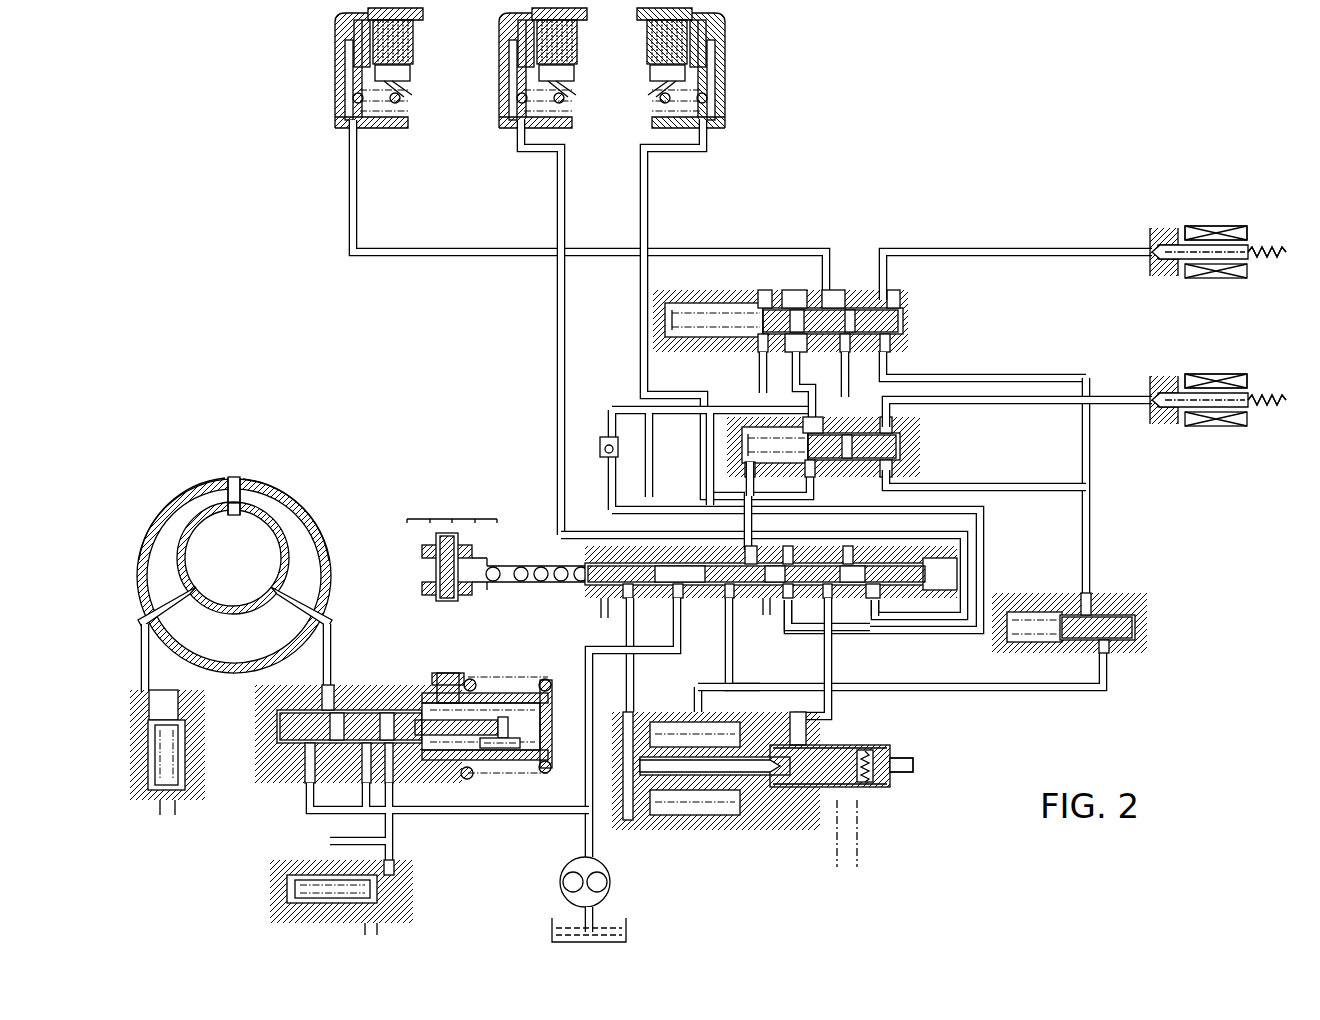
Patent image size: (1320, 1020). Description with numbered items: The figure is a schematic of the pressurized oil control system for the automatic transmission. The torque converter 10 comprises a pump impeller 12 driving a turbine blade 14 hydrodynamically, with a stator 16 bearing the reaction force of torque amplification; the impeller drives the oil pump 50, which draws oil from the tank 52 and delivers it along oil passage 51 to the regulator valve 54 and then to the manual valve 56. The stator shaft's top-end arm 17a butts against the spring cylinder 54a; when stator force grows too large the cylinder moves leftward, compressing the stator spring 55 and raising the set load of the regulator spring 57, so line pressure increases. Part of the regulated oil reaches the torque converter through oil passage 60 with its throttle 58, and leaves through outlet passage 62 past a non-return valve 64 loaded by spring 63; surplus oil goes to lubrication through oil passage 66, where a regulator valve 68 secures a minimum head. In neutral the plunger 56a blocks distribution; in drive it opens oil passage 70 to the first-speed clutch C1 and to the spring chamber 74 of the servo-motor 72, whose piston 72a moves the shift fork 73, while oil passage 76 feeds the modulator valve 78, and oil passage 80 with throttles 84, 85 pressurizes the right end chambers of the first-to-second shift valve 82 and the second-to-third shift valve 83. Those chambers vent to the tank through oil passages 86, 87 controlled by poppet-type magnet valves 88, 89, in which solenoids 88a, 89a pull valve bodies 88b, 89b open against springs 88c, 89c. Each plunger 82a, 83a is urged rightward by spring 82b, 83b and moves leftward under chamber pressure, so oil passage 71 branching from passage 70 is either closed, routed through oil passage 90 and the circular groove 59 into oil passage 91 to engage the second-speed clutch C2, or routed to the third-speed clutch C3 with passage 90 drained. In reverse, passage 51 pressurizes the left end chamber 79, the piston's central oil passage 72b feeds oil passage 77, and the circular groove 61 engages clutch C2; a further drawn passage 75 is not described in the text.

The torque converter 10 is at (277, 478).
The pump impeller 12 is at (308, 512).
The turbine blade 14 is at (178, 493).
The stator 16 is at (234, 668).
The top-end arm 17a is at (566, 728).
The oil pump 50 is at (622, 886).
The oil passage 51 is at (682, 628).
The tank 52 is at (630, 933).
The regulator valve 54 is at (292, 775).
The spring cylinder 54a is at (438, 768).
The stator spring 55 is at (460, 688).
The manual valve 56 is at (540, 556).
The plunger 56a is at (653, 594).
The regulator spring 57 is at (515, 766).
The throttle 58 is at (333, 670).
The circular groove 59 is at (880, 608).
The oil passage 60 is at (333, 636).
The circular groove 61 is at (792, 608).
The outlet passage 62 is at (141, 672).
The spring 63 is at (188, 770).
The non-return valve 64 is at (130, 768).
The oil passage 66 is at (393, 840).
The regulator valve 68 is at (386, 906).
The oil passage 70 is at (753, 520).
The oil passage 71 is at (808, 488).
The servo-motor 72 is at (825, 806).
The piston 72a is at (778, 790).
The oil passage 72b is at (752, 776).
The shift fork 73 is at (860, 850).
The spring chamber 74 is at (672, 820).
The passage 75 is at (733, 672).
The oil passage 76 is at (1040, 690).
The oil passage 77 is at (832, 668).
The modulator valve 78 is at (1113, 658).
The left end chamber 79 is at (633, 778).
The oil passage 80 is at (1090, 548).
The 1-2 shift valve 82 is at (898, 445).
The plunger 82a is at (863, 420).
The spring 82b is at (747, 455).
The 2-3 shift valve 83 is at (913, 318).
The plunger 83a is at (853, 300).
The spring 83b is at (690, 308).
The throttle 84 is at (893, 477).
The throttle 85 is at (892, 352).
The oil passage 86 is at (1110, 401).
The oil passage 87 is at (1058, 249).
The magnet valve 88 is at (1228, 432).
The solenoid 88a is at (1222, 374).
The poppet-type valve body 88b is at (1250, 398).
The spring 88c is at (1272, 412).
The magnet valve 89 is at (1222, 284).
The solenoid 89a is at (1210, 226).
The poppet-type valve body 89b is at (1250, 245).
The spring 89c is at (1272, 262).
The oil passage 90 is at (690, 408).
The oil passage 91 is at (930, 617).
The first-speed clutch C1 is at (739, 56).
The second-speed clutch C2 is at (578, 65).
The third-speed clutch C3 is at (413, 68).